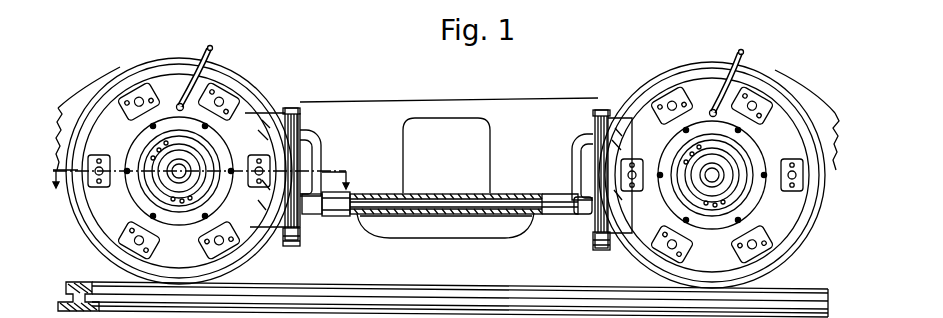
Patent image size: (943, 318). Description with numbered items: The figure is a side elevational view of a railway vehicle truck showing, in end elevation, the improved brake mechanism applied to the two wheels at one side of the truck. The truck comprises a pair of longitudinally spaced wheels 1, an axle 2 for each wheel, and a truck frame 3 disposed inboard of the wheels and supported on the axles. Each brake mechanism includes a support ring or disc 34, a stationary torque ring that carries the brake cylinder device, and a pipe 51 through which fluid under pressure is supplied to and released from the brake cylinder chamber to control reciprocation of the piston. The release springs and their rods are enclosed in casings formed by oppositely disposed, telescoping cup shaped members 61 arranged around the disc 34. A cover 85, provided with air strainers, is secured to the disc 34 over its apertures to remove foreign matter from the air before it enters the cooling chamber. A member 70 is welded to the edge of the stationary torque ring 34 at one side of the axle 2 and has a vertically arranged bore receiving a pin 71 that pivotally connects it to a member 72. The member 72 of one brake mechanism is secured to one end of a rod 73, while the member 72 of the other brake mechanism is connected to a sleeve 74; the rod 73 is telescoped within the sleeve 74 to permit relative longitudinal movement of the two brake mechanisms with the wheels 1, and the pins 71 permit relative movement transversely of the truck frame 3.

The wheel 1 is at (134, 76).
The axle 2 is at (198, 180).
The truck frame 3 is at (414, 113).
The support ring or disc 34 is at (241, 120).
The pipe 51 is at (207, 48).
The cup shaped members 61 is at (216, 95).
The member 70 is at (274, 123).
The pin 71 is at (298, 132).
The member 72 is at (311, 143).
The rod 73 is at (553, 215).
The sleeve 74 is at (337, 216).
The cover 85 is at (183, 219).